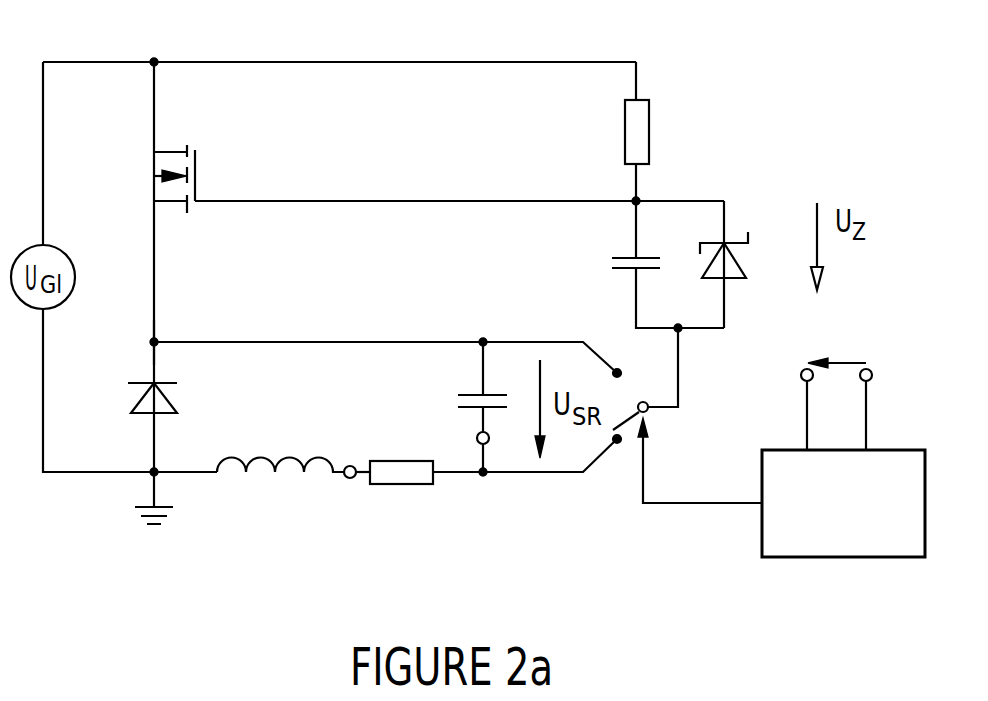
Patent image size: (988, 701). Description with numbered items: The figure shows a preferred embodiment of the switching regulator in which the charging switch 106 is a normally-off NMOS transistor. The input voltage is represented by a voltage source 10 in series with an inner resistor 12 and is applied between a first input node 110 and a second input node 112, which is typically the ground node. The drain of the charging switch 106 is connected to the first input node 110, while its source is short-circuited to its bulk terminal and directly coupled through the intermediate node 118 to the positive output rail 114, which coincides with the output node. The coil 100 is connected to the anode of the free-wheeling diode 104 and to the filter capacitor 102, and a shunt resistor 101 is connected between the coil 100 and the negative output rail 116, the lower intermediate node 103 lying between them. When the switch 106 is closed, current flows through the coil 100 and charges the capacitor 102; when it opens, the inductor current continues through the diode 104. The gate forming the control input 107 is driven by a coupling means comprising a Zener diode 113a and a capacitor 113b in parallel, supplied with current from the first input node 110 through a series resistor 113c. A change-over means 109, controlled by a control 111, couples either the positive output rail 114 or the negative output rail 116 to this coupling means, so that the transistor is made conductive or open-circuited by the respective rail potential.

The voltage source U0 10 is at (64, 246).
The inner resistor Ri 12 is at (82, 215).
The first input node 110 is at (155, 60).
The charging switch 106 is at (184, 128).
The control input 107 is at (273, 201).
The intermediate node 118 is at (153, 338).
The diode 104 is at (135, 402).
The second input node 112 is at (148, 473).
The coil 100 is at (272, 460).
The lower intermediate node 103 is at (352, 478).
The shunt resistor RSh 101 is at (388, 460).
The negative output rail 116 is at (485, 477).
The filter capacitor CS 102 is at (468, 388).
The positive output rail 114 is at (483, 338).
The change-over means 109 is at (640, 412).
The Zener diode DZ 113a is at (740, 243).
The capacitor CZ 113b is at (625, 252).
The series resistor RZ 113c is at (643, 100).
The control 111 is at (840, 557).